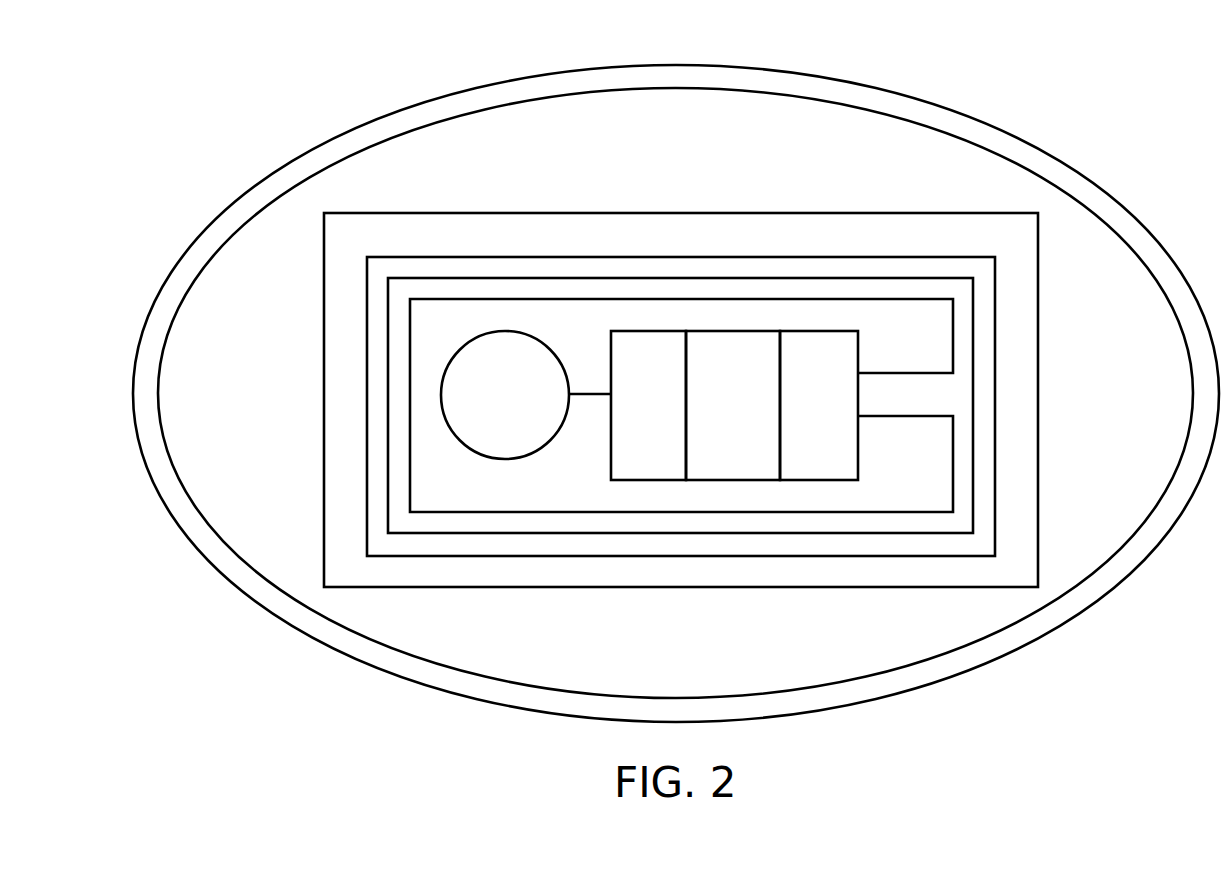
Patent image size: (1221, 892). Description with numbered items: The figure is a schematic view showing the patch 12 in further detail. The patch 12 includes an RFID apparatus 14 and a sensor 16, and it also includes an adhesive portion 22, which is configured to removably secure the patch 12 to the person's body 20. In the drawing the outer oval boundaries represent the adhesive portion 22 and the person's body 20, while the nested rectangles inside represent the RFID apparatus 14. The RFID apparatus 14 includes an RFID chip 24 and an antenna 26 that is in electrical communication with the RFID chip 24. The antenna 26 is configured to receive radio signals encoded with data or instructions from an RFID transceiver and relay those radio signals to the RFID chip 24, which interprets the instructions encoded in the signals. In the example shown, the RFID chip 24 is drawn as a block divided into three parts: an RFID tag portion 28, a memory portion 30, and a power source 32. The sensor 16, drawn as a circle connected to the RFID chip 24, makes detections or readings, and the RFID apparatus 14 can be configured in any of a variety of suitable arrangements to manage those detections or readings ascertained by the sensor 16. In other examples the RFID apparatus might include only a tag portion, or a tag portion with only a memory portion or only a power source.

The patch 12 is at (1130, 177).
The RFID apparatus 14 is at (543, 223).
The sensor 16 is at (500, 452).
The person's body 20 is at (220, 322).
The adhesive portion 22 is at (368, 657).
The RFID chip 24 is at (757, 482).
The antenna 26 is at (768, 278).
The RFID tag portion 28 is at (611, 457).
The memory portion 30 is at (723, 478).
The power source 32 is at (847, 455).